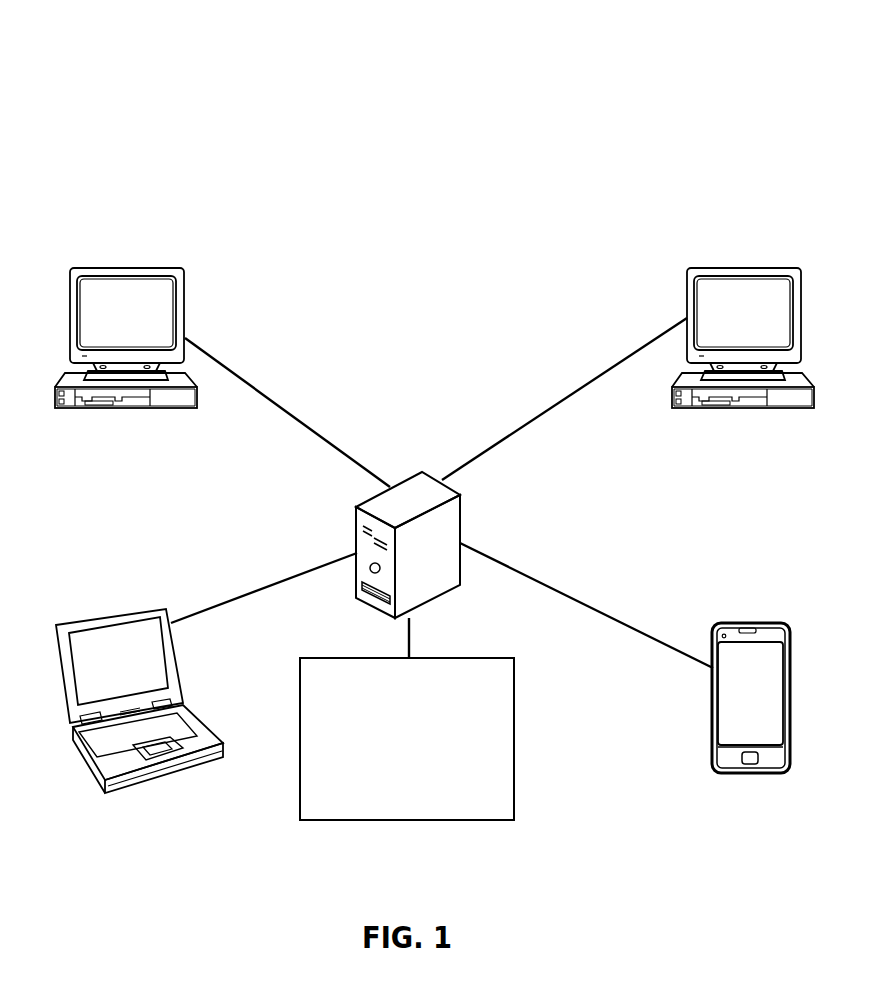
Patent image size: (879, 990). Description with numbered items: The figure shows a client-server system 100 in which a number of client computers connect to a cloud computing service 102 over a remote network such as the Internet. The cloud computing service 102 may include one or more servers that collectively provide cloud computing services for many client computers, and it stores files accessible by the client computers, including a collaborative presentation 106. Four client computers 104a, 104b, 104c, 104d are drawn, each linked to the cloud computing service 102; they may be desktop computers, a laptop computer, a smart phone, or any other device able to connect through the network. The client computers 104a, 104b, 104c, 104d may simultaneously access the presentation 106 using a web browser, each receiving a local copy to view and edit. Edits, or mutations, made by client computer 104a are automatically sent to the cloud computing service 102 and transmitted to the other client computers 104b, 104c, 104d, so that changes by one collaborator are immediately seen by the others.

The client-server system 100 is at (360, 58).
The cloud computing service 102 is at (405, 476).
The client computer 104a is at (128, 267).
The client computer 104b is at (742, 268).
The client computer 104c is at (110, 617).
The client computer 104d is at (750, 623).
The collaborative presentation 106 is at (340, 658).